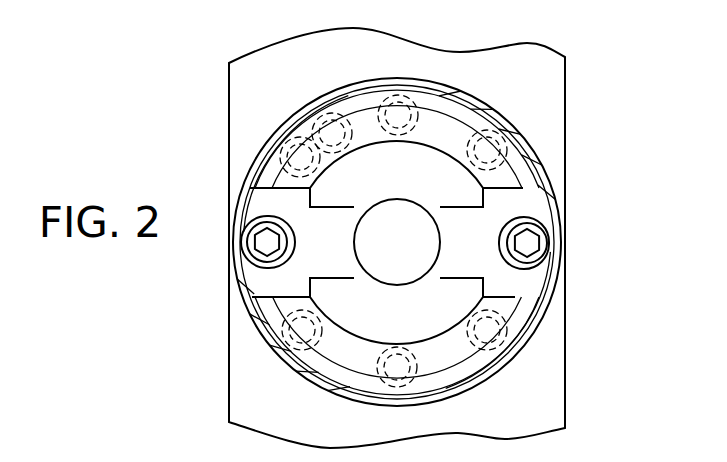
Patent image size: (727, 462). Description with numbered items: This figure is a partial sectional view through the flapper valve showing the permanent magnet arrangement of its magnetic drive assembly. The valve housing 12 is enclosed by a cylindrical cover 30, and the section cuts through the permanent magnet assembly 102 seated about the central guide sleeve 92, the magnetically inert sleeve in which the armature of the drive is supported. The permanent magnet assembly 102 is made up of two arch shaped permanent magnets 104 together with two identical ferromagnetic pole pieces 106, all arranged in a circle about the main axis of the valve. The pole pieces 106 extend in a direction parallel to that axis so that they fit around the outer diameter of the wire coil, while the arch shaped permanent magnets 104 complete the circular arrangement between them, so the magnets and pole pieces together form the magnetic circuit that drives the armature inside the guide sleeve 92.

The valve housing 12 is at (555, 76).
The cylindrical cover 30 is at (528, 147).
The guide sleeve 92 is at (400, 198).
The permanent magnet assembly 102 is at (276, 200).
The arch shaped permanent magnets 104 is at (443, 123).
The ferromagnetic pole pieces 106 is at (525, 200).